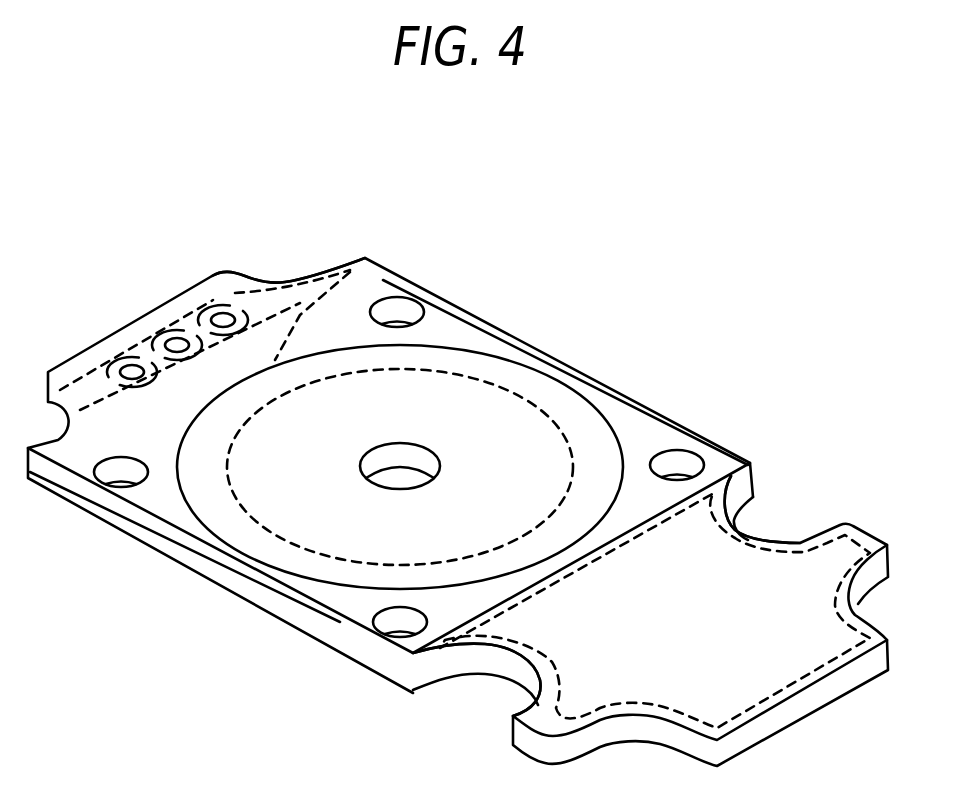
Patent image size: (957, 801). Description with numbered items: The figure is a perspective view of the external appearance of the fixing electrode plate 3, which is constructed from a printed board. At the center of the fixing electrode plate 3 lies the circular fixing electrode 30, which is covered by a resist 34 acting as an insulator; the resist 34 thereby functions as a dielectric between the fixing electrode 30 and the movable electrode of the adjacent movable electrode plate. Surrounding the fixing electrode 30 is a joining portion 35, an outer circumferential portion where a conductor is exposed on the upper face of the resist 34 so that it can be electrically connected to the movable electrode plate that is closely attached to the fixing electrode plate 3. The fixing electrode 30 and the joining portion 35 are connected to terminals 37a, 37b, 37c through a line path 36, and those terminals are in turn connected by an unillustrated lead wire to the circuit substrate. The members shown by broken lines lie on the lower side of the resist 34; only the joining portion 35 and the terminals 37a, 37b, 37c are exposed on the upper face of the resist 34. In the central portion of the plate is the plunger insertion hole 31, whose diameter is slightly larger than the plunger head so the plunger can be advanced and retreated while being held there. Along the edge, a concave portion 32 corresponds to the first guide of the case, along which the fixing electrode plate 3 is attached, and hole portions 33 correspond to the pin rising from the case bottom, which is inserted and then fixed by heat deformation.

The fixing electrode plate 3 is at (742, 250).
The fixing electrode 30 is at (497, 423).
The plunger insertion hole 31 is at (392, 481).
The concave portion 32 is at (500, 663).
The hole portion 33 is at (400, 310).
The resist 34 is at (223, 527).
The joining portion 35 is at (630, 427).
The line path 36 is at (271, 290).
The terminal 37a is at (220, 317).
The terminal 37b is at (175, 342).
The terminal 37c is at (130, 369).